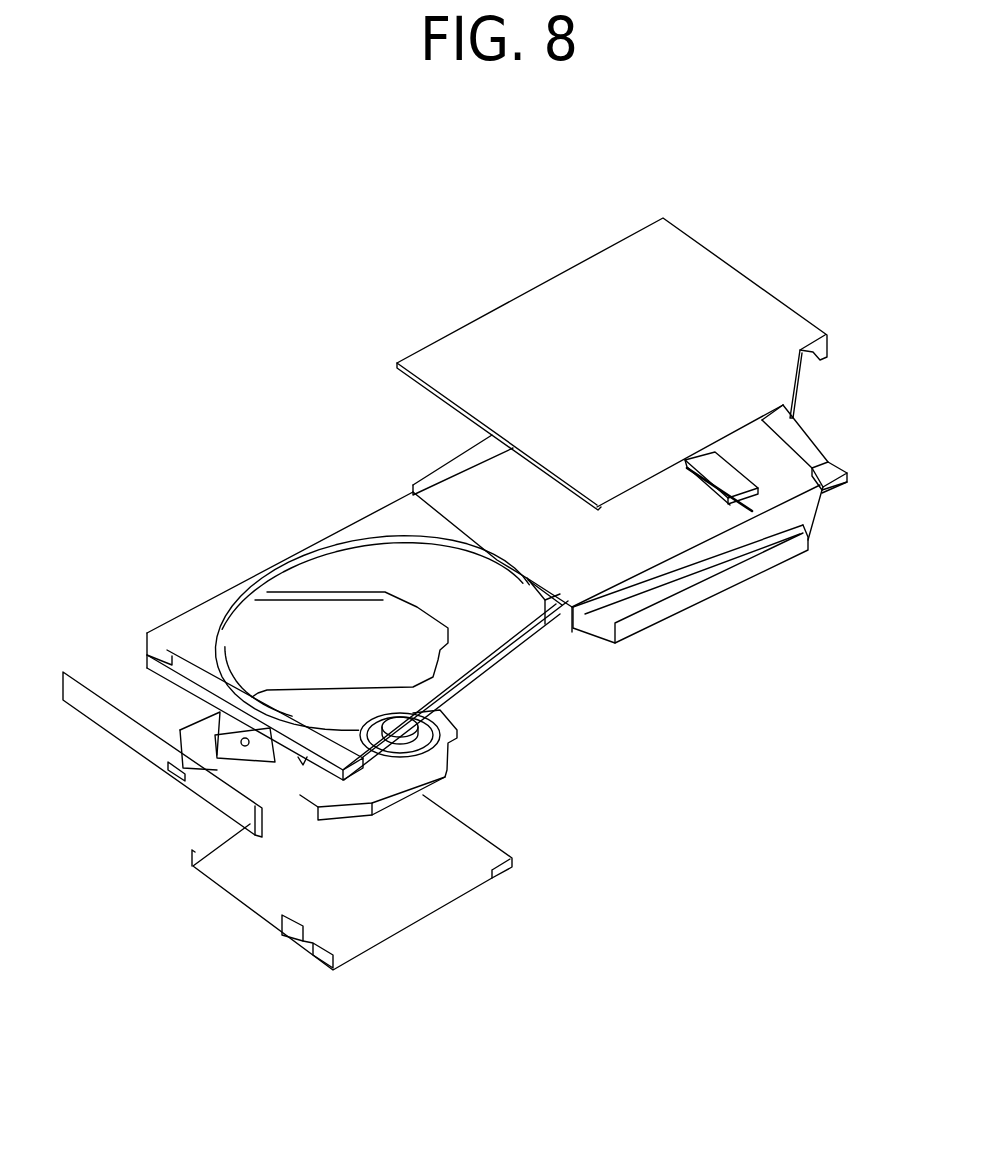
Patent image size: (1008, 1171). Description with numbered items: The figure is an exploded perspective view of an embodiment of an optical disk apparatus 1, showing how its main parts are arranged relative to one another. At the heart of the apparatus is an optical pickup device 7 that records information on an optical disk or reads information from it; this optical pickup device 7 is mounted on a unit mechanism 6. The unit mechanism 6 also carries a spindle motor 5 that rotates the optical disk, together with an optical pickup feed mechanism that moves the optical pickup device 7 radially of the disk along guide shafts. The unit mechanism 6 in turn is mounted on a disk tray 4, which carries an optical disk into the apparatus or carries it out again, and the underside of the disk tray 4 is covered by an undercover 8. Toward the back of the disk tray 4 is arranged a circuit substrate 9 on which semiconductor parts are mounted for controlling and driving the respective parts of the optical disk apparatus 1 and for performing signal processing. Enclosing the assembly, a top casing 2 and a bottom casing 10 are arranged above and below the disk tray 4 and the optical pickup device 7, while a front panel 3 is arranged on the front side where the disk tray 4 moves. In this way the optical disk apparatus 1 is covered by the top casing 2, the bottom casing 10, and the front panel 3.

The optical disk apparatus 1 is at (206, 318).
The top casing 2 is at (728, 300).
The front panel 3 is at (130, 738).
The disk tray 4 is at (300, 548).
The spindle motor 5 is at (412, 729).
The unit mechanism 6 is at (455, 757).
The optical pickup device 7 is at (215, 722).
The undercover 8 is at (400, 907).
The circuit substrate 9 is at (772, 462).
The bottom casing 10 is at (712, 555).